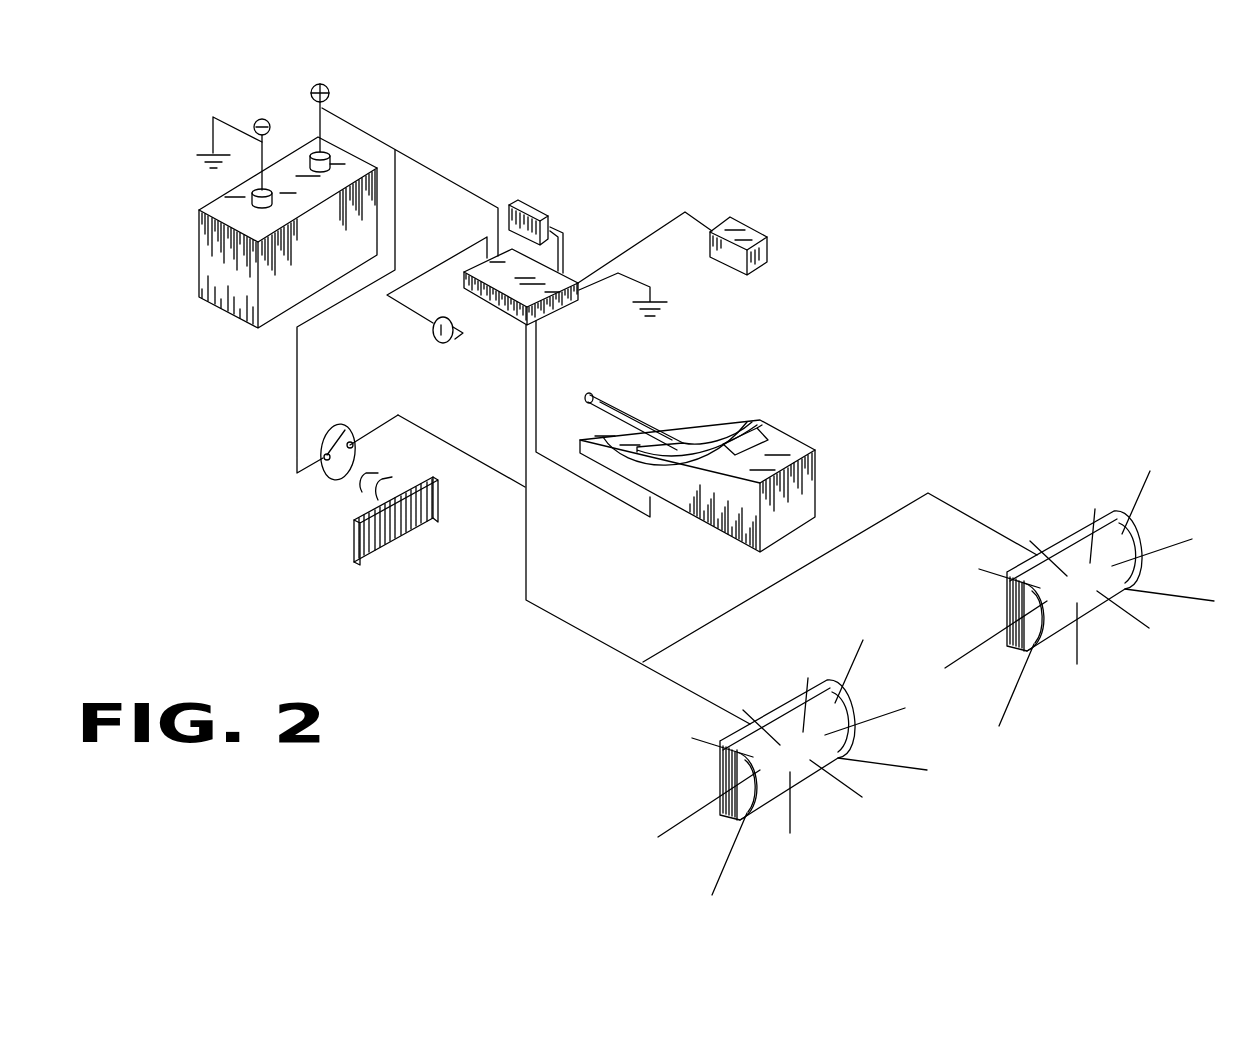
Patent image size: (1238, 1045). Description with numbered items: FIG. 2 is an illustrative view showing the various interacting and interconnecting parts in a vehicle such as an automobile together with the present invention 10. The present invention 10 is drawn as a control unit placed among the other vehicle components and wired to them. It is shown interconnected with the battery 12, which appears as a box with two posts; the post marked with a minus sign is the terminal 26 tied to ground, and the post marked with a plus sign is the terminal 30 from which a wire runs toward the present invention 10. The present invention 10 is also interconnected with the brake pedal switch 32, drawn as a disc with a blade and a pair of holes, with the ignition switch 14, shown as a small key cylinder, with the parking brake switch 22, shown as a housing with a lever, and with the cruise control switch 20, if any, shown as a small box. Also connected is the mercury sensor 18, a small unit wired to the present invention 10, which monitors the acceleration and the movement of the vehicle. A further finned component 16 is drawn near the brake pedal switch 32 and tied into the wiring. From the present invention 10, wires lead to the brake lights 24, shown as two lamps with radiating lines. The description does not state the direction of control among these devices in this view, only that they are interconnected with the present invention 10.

The present invention 10 is at (553, 317).
The battery 12 is at (220, 290).
The ignition switch 14 is at (433, 329).
The speaker/heater unit 16 is at (353, 543).
The mercury sensor 18 is at (531, 207).
The cruise control switch 20 is at (727, 223).
The parking brake switch 22 is at (790, 443).
The brake lights 24 is at (852, 728).
The negative battery terminal 26 is at (252, 198).
The positive battery terminal 30 is at (324, 152).
The brake pedal switch 32 is at (328, 474).